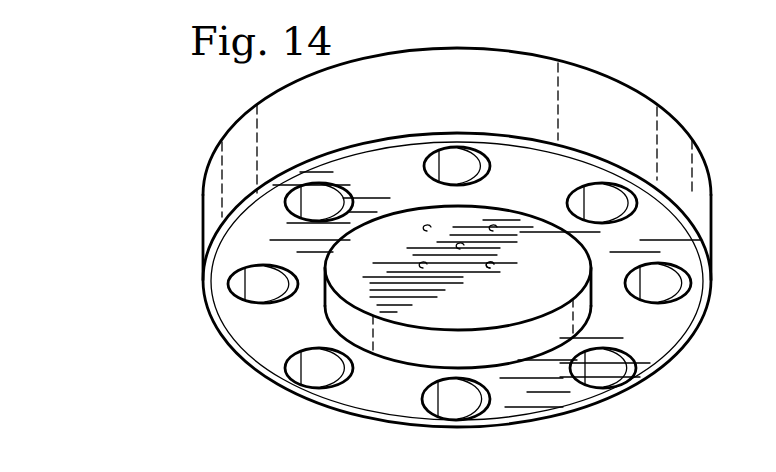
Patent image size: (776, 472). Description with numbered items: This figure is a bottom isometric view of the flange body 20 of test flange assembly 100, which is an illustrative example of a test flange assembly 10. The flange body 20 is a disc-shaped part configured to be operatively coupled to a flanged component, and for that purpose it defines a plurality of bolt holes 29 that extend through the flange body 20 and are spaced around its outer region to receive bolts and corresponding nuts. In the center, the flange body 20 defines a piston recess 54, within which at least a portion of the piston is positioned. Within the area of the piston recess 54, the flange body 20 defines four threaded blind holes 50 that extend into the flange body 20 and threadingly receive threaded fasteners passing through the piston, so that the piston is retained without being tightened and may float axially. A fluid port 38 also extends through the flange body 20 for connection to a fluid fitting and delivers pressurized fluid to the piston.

The test flange assembly 10 is at (719, 49).
The test flange assembly 100 is at (674, 83).
The flange body 20 is at (680, 112).
The bolt holes 29 is at (262, 270).
The fluid port 38 is at (496, 266).
The threaded blind holes 50 is at (490, 267).
The piston recess 54 is at (359, 312).